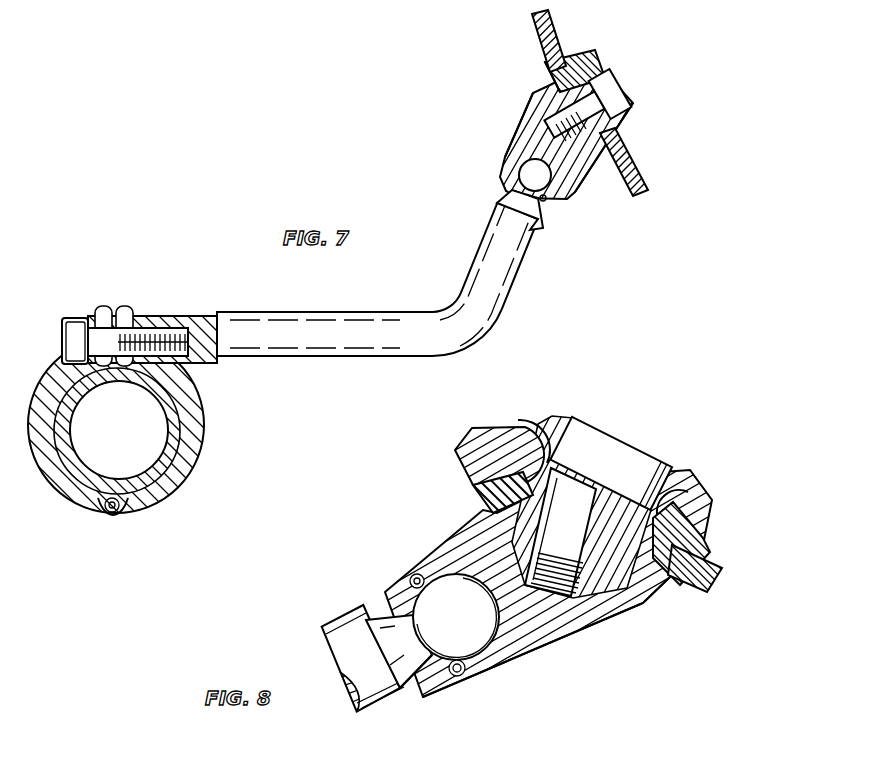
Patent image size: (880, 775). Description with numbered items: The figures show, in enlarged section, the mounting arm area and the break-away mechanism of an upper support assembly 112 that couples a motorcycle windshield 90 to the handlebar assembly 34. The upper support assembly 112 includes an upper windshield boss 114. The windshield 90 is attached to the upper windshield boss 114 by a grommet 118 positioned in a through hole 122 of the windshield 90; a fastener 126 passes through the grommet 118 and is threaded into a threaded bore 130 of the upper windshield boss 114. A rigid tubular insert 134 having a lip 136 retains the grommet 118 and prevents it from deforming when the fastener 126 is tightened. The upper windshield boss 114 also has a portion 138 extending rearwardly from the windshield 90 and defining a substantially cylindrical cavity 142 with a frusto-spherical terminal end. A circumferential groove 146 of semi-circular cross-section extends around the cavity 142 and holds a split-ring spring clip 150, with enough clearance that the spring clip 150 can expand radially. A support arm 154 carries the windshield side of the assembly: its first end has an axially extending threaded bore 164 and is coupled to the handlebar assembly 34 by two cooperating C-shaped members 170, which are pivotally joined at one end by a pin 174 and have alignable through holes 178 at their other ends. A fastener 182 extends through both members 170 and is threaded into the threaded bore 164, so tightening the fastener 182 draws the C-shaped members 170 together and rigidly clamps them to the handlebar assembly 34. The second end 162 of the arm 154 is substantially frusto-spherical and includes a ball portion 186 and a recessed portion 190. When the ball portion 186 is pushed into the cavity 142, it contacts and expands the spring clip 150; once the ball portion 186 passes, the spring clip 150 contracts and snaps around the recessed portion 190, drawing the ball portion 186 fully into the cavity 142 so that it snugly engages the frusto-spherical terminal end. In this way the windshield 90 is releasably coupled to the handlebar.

In FIG. 7, the handlebar assembly 34 is at (80, 490).
In FIG. 7, the windshield 90 is at (538, 23).
In FIG. 8, the windshield 90 is at (722, 580).
In FIG. 7, the upper support assembly 112 is at (230, 160).
In FIG. 7, the upper windshield boss 114 is at (527, 121).
In FIG. 8, the upper windshield boss 114 is at (585, 637).
In FIG. 7, the grommet 118 is at (628, 146).
In FIG. 8, the grommet 118 is at (693, 522).
In FIG. 7, the through hole 122 is at (618, 125).
In FIG. 8, the through hole 122 is at (688, 490).
In FIG. 7, the fastener 126 is at (618, 92).
In FIG. 8, the fastener 126 is at (630, 457).
In FIG. 7, the threaded bore 130 is at (572, 165).
In FIG. 8, the threaded bore 130 is at (628, 612).
In FIG. 7, the rigid tubular insert 134 is at (558, 96).
In FIG. 8, the rigid tubular insert 134 is at (525, 440).
In FIG. 7, the lip 136 is at (578, 73).
In FIG. 8, the lip 136 is at (552, 420).
In FIG. 7, the portion 138 is at (498, 152).
In FIG. 8, the portion 138 is at (495, 688).
In FIG. 7, the cylindrical cavity 142 is at (505, 193).
In FIG. 8, the cylindrical cavity 142 is at (410, 593).
In FIG. 8, the circumferential groove 146 is at (419, 573).
In FIG. 7, the split-ring spring clip 150 is at (548, 199).
In FIG. 8, the split-ring spring clip 150 is at (457, 677).
In FIG. 7, the support arm 154 is at (333, 330).
In FIG. 8, the support arm 154 is at (323, 625).
In FIG. 7, the second end 162 is at (545, 226).
In FIG. 8, the second end 162 is at (408, 596).
In FIG. 7, the threaded bore 164 is at (188, 314).
In FIG. 7, the C-shaped members 170 is at (45, 423).
In FIG. 7, the pin 174 is at (120, 511).
In FIG. 7, the through holes 178 is at (126, 306).
In FIG. 7, the fastener 182 is at (75, 318).
In FIG. 8, the ball portion 186 is at (530, 670).
In FIG. 8, the recessed portion 190 is at (424, 672).